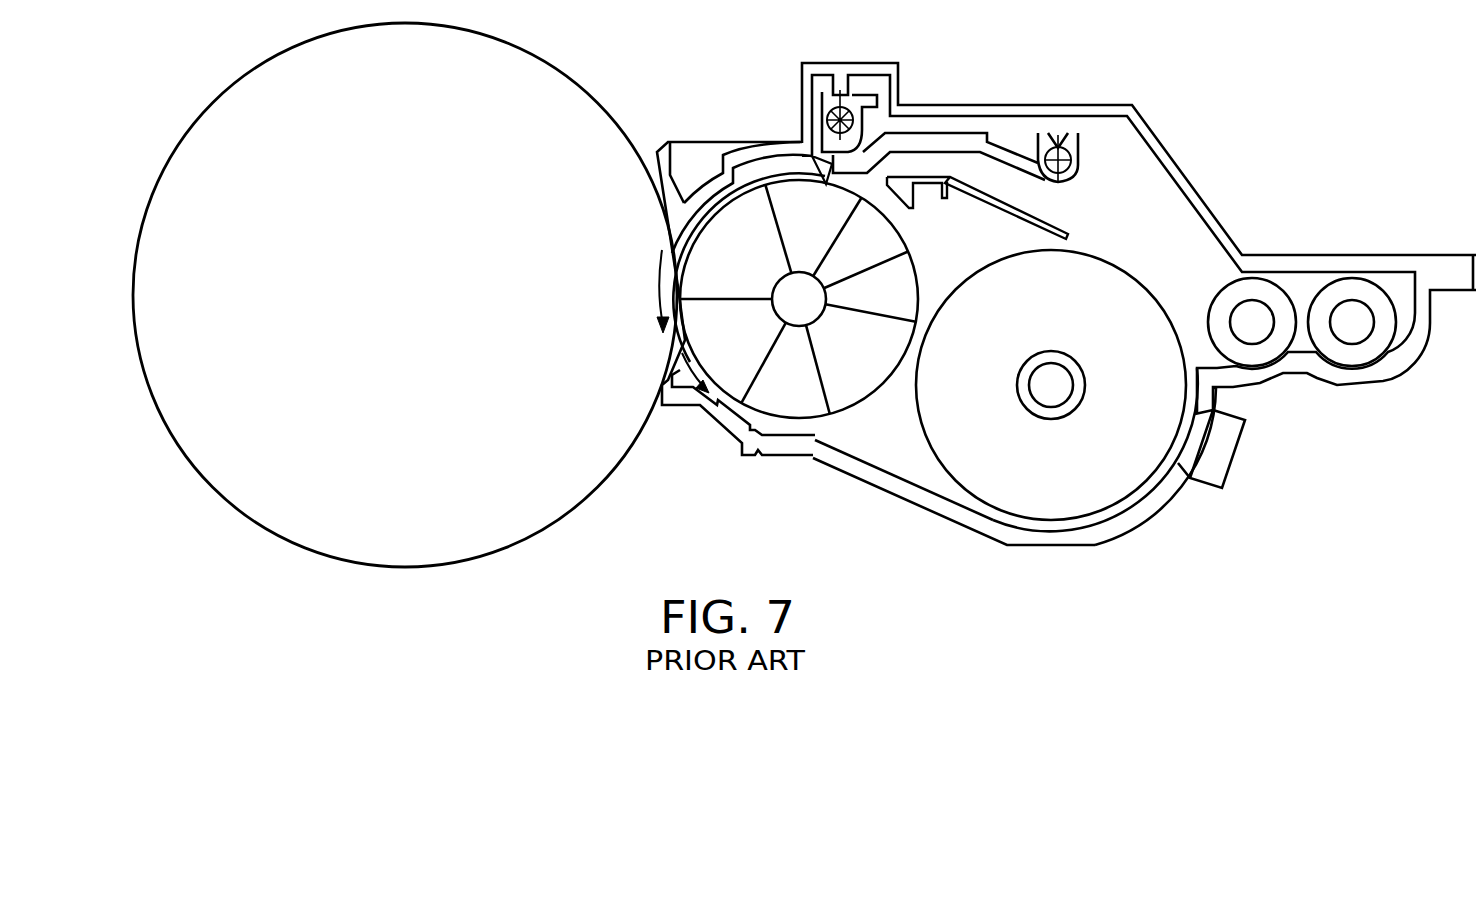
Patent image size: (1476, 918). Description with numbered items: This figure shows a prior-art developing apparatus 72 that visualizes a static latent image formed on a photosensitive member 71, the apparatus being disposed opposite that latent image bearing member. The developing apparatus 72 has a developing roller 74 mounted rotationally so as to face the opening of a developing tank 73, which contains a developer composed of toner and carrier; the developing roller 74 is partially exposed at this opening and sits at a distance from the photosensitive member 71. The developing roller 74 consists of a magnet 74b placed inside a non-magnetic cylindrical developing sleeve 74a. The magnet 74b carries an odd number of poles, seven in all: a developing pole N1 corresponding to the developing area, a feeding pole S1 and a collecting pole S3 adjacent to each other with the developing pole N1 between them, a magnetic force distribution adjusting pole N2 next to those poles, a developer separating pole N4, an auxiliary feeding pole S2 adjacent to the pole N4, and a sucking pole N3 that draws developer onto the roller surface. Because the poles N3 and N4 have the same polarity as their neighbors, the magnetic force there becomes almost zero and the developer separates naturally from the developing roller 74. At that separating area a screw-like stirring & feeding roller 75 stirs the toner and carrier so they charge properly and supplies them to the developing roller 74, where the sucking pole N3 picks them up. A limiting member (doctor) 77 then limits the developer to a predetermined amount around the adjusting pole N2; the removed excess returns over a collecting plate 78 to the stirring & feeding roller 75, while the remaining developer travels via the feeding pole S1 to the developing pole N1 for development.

The photosensitive member 71 is at (556, 90).
The developing apparatus 72 is at (1084, 96).
The developing tank 73 is at (947, 510).
The developing roller 74 is at (795, 339).
The developing sleeve 74a is at (767, 417).
The magnet 74b is at (798, 314).
The stirring & feeding roller 75 is at (1120, 482).
The limiting member (doctor) 77 is at (830, 165).
The collecting plate 78 is at (1048, 224).
The developing pole N1 is at (726, 279).
The feeding pole S1 is at (763, 229).
The magnetic force distribution adjusting pole N2 is at (835, 235).
The auxiliary feeding pole S2 is at (866, 259).
The sucking pole N3 is at (871, 328).
The developer separating pole N4 is at (835, 369).
The collecting pole S3 is at (752, 363).